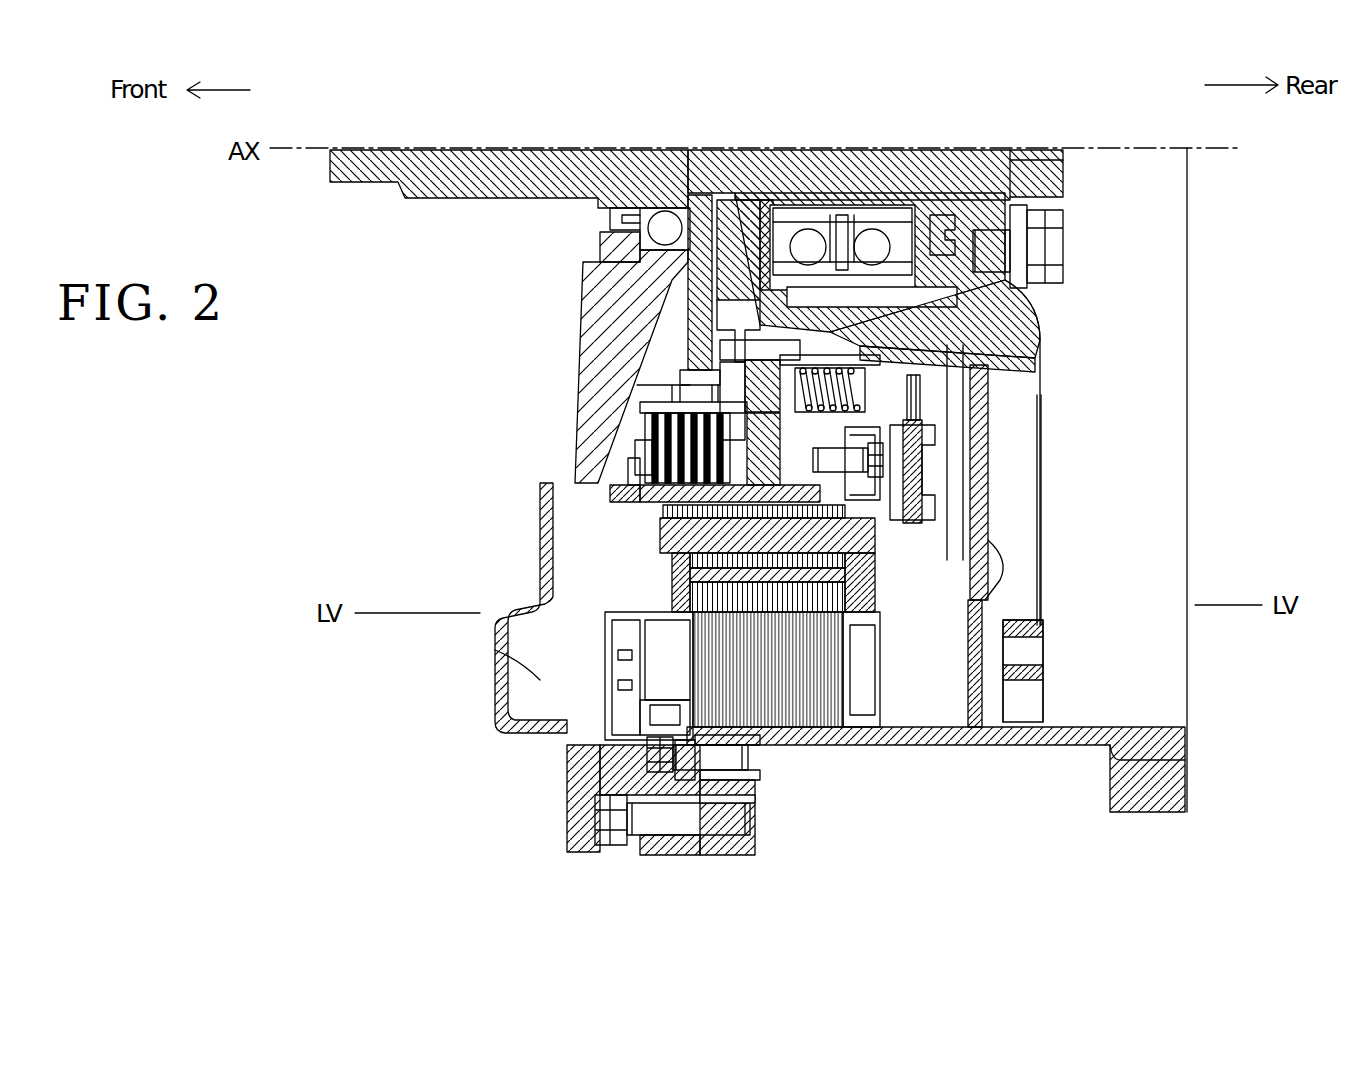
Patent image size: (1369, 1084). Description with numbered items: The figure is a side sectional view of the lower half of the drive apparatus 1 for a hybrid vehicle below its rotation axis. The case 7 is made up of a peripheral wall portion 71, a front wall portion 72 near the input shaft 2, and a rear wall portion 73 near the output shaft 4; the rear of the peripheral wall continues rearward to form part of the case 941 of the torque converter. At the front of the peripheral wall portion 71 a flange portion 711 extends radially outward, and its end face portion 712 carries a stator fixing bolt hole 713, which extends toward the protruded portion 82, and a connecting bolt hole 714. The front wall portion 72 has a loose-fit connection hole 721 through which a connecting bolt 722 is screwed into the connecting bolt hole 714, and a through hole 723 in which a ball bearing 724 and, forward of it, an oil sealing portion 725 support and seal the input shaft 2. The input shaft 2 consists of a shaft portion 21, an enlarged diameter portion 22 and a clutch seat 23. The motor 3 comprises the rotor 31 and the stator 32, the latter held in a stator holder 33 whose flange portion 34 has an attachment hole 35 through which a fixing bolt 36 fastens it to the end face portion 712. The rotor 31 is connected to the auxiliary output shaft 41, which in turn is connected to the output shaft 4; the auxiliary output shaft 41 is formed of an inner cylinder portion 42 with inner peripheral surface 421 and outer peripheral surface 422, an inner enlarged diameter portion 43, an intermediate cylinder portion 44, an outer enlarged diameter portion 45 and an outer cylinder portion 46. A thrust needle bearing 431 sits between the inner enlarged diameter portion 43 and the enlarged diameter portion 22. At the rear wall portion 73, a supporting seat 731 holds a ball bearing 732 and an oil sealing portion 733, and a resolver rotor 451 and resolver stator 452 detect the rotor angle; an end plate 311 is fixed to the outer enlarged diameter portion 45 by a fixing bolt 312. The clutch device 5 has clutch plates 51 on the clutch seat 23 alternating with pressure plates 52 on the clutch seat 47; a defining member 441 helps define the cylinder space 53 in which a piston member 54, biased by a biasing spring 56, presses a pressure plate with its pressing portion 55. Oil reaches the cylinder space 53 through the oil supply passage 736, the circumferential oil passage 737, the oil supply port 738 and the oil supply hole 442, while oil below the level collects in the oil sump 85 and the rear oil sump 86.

The drive apparatus 1 is at (332, 104).
The input shaft 2 is at (442, 106).
The shaft portion 21 is at (523, 148).
The enlarged diameter portion 22 is at (690, 305).
The clutch seat 23 is at (621, 406).
The motor 3 is at (598, 607).
The rotor 31 is at (715, 568).
The stator 32 is at (750, 670).
The stator holder 33 is at (870, 760).
The flange portion 34 is at (690, 780).
The attachment hole 35 is at (695, 760).
The fixing bolt 36 is at (647, 765).
The output shaft 4 is at (905, 205).
The auxiliary output shaft 41 is at (985, 362).
The inner cylinder portion 42 is at (812, 230).
The inner peripheral surface 421 is at (815, 228).
The outer peripheral surface 422 is at (874, 228).
The inner enlarged diameter portion 43 is at (740, 235).
The thrust needle bearing 431 is at (702, 195).
The intermediate cylinder portion 44 is at (1000, 320).
The defining member 441 is at (780, 368).
The oil supply hole 442 is at (720, 345).
The outer enlarged diameter portion 45 is at (950, 372).
The resolver rotor 451 is at (910, 420).
The resolver stator 452 is at (925, 455).
The outer cylinder portion 46 is at (750, 497).
The clutch seat 47 is at (640, 500).
The clutch device 5 is at (690, 418).
The clutch plates 51 is at (700, 445).
The pressure plates 52 is at (645, 455).
The cylinder space 53 is at (720, 380).
The piston member 54 is at (780, 348).
The pressing portion 55 is at (700, 478).
The biasing spring 56 is at (795, 378).
The case 7 is at (665, 881).
The peripheral wall portion 71 is at (898, 735).
The flange portion 711 is at (745, 792).
The end face portion 712 is at (697, 855).
The stator fixing bolt hole 713 is at (730, 785).
The connecting bolt hole 714 is at (705, 805).
The loose-fit connection hole 721 is at (652, 848).
The connecting bolt 722 is at (608, 820).
The through hole 723 is at (628, 228).
The ball bearing 724 is at (640, 262).
The oil sealing portion 725 is at (612, 216).
The front wall portion 72 is at (575, 740).
The rear wall portion 73 is at (985, 700).
The supporting seat 731 is at (775, 230).
The ball bearing 732 is at (842, 212).
The oil sealing portion 733 is at (960, 230).
The oil supply passage 736 is at (1000, 555).
The circumferential oil passage 737 is at (958, 288).
The oil supply port 738 is at (900, 300).
The protruded portion 82 is at (770, 752).
The oil sump 85 is at (545, 680).
The rear oil sump 86 is at (925, 690).
The end plate 311 is at (1025, 572).
The fixing bolt 312 is at (965, 505).
The case of the torque converter 941 is at (1092, 745).